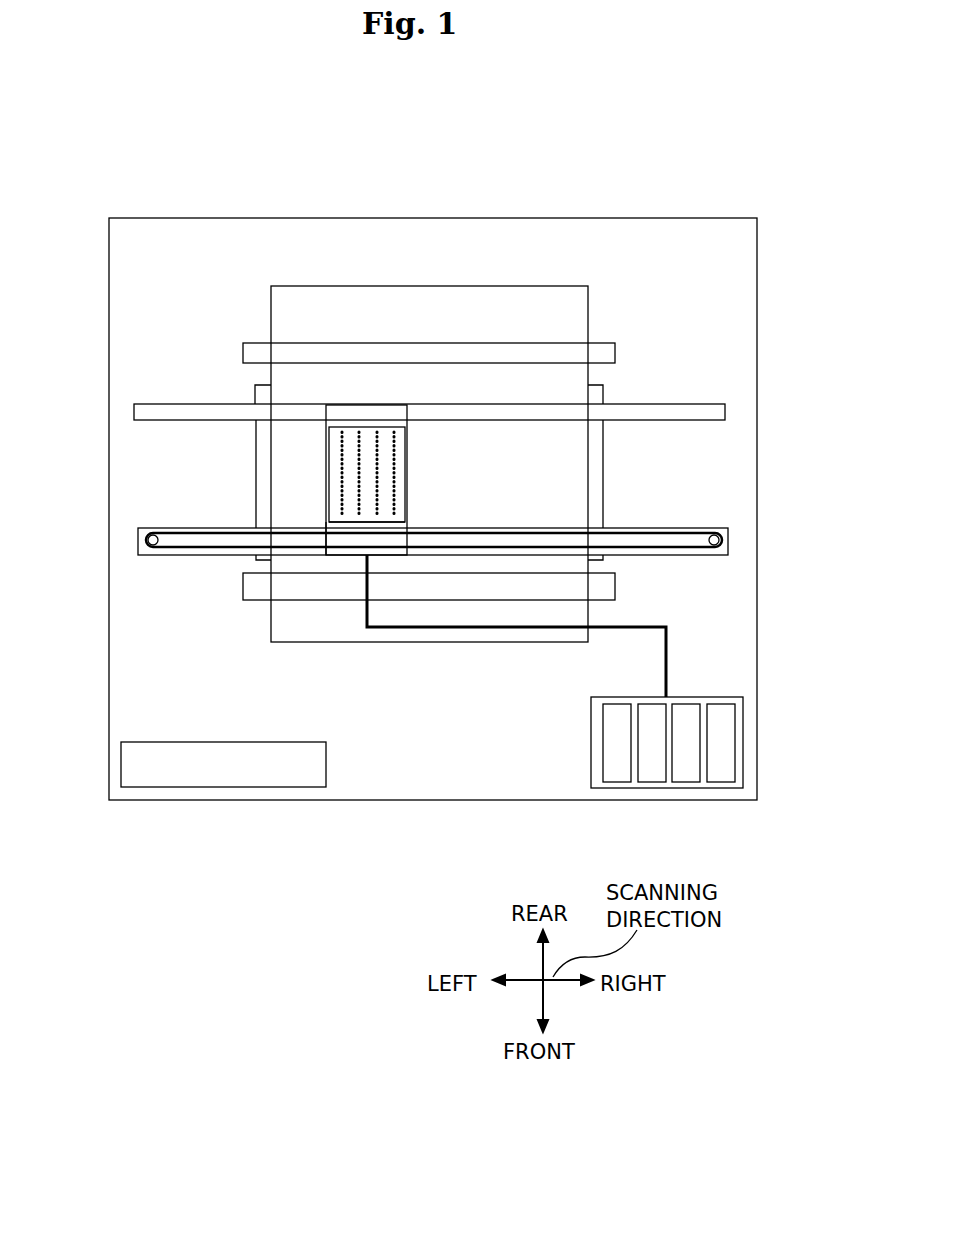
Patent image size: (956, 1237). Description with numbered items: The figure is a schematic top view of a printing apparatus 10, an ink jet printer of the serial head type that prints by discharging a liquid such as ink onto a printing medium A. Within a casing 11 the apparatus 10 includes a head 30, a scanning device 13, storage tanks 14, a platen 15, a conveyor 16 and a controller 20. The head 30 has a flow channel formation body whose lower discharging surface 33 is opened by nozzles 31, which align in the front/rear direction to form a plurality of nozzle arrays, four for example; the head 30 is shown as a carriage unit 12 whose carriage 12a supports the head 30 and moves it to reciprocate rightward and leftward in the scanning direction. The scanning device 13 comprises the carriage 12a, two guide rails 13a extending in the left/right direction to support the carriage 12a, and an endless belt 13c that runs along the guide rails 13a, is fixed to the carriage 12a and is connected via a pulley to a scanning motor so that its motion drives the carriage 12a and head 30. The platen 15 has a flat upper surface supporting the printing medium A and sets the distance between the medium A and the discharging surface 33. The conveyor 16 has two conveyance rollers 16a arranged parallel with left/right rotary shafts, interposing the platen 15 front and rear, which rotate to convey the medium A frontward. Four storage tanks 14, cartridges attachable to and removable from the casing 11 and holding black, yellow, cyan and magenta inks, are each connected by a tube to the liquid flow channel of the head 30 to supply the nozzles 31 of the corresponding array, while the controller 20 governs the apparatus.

The printing apparatus 10 is at (490, 200).
The casing 11 is at (396, 218).
The carriage 12 is at (322, 427).
The carriage 12a is at (330, 538).
The scanning device 13 is at (155, 377).
The guide rails 13a is at (237, 528).
The endless belt 13c is at (172, 555).
The storage tank 14 is at (682, 723).
The platen 15 is at (602, 395).
The conveyor 16 is at (429, 472).
The conveyance rollers 16a is at (610, 353).
The controller 20 is at (178, 742).
The head 30 is at (373, 522).
The nozzles 31 is at (378, 517).
The discharging surface 33 is at (348, 505).
The printing medium A is at (533, 632).